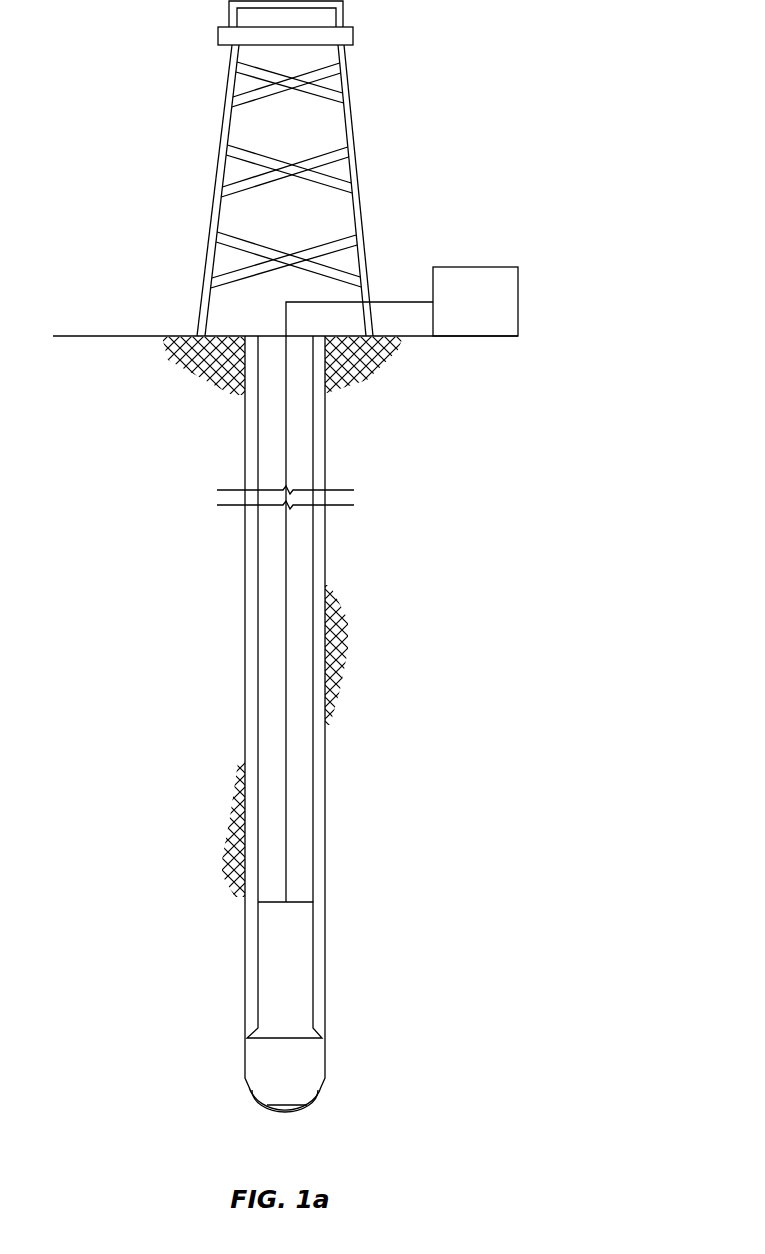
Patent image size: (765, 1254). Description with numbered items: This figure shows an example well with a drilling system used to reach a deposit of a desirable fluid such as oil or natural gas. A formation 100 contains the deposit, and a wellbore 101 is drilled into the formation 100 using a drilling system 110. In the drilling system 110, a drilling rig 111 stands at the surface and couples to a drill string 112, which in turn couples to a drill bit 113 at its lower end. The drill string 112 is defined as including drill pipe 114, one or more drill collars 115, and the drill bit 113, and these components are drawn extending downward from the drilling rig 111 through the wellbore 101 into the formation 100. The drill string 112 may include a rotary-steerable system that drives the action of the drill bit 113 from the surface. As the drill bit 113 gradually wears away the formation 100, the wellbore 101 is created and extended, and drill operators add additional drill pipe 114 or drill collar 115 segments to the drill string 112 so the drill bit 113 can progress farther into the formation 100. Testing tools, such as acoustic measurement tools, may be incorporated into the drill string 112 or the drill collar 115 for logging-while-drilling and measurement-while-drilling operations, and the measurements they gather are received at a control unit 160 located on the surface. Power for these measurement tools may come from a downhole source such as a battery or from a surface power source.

The formation 100 is at (497, 557).
The drilling system 110 is at (308, 168).
The drilling rig 111 is at (212, 188).
The control unit 160 is at (455, 314).
The wellbore 101 is at (330, 455).
The drill string 112 is at (220, 622).
The drill pipe 114 is at (257, 737).
The drill collar 115 is at (315, 970).
The drill bit 113 is at (247, 1064).